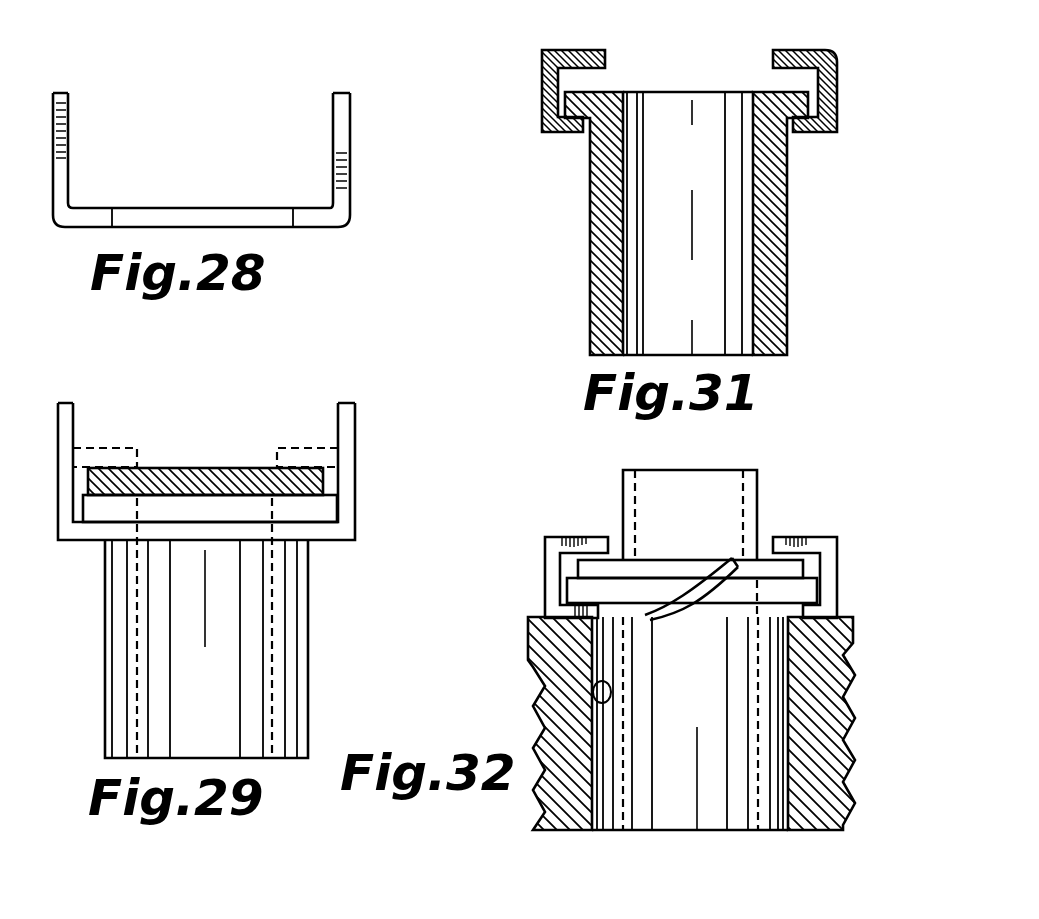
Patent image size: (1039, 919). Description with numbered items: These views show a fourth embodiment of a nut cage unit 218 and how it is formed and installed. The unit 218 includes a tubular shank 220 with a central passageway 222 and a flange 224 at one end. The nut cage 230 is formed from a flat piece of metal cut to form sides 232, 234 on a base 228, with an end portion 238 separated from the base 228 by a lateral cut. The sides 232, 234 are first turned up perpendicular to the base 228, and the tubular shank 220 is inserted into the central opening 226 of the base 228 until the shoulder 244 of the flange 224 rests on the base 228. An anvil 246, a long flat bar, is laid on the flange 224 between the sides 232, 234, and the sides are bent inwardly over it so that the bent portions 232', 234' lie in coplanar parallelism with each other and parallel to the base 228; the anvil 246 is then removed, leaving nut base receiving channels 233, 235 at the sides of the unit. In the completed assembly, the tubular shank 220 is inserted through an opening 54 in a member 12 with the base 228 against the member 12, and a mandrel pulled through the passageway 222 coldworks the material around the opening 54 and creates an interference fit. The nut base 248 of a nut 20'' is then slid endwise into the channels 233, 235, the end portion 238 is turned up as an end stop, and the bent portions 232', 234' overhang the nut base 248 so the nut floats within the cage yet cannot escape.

In FIG. 32, the member 12 is at (550, 640).
In FIG. 32, the nut 20'' is at (697, 490).
In FIG. 32, the opening 54 is at (597, 692).
In FIG. 29, the nut cage unit 218 is at (85, 560).
In FIG. 31, the tubular shank 220 is at (603, 280).
In FIG. 29, the tubular shank 220 is at (293, 640).
In FIG. 31, the central passageway 222 is at (667, 213).
In FIG. 29, the central passageway 222 is at (248, 600).
In FIG. 31, the flange 224 is at (607, 100).
In FIG. 29, the flange 224 is at (202, 510).
In FIG. 28, the central opening 226 is at (177, 215).
In FIG. 28, the base 228 is at (312, 208).
In FIG. 28, the nut cage 230 is at (312, 240).
In FIG. 28, the side 232 is at (99, 128).
In FIG. 31, the side 232 is at (530, 91).
In FIG. 29, the side 232 is at (94, 453).
In FIG. 32, the side 232 is at (534, 577).
In FIG. 31, the bent portion 232' is at (549, 36).
In FIG. 29, the bent portion 232' is at (129, 431).
In FIG. 32, the bent portion 232' is at (576, 514).
In FIG. 31, the nut base receiving channel 233 is at (583, 80).
In FIG. 32, the nut base receiving channel 233 is at (570, 563).
In FIG. 28, the side 234 is at (377, 117).
In FIG. 31, the side 234 is at (839, 68).
In FIG. 29, the side 234 is at (383, 471).
In FIG. 32, the side 234 is at (832, 553).
In FIG. 29, the bent portion 234' is at (363, 461).
In FIG. 32, the bent portion 234' is at (811, 503).
In FIG. 31, the nut base receiving channel 235 is at (798, 80).
In FIG. 32, the nut base receiving channel 235 is at (763, 547).
In FIG. 32, the end portion 238 is at (693, 590).
In FIG. 31, the shoulder 244 is at (573, 125).
In FIG. 29, the anvil 246 is at (257, 478).
In FIG. 32, the nut base 248 is at (613, 560).